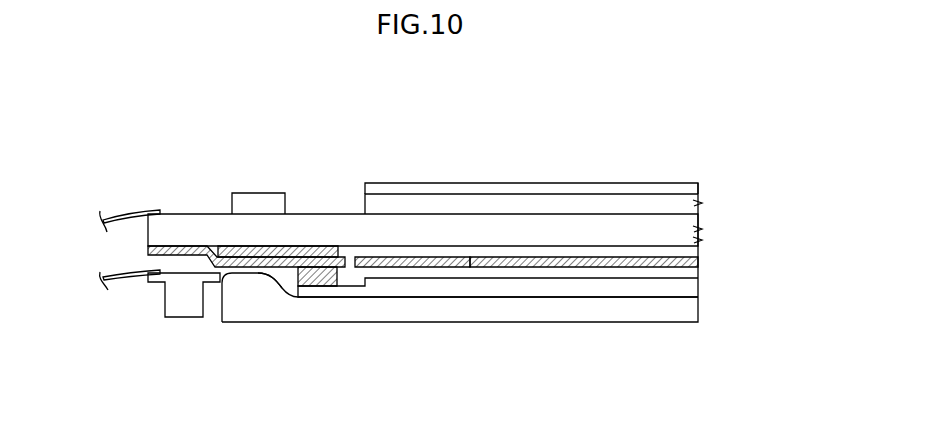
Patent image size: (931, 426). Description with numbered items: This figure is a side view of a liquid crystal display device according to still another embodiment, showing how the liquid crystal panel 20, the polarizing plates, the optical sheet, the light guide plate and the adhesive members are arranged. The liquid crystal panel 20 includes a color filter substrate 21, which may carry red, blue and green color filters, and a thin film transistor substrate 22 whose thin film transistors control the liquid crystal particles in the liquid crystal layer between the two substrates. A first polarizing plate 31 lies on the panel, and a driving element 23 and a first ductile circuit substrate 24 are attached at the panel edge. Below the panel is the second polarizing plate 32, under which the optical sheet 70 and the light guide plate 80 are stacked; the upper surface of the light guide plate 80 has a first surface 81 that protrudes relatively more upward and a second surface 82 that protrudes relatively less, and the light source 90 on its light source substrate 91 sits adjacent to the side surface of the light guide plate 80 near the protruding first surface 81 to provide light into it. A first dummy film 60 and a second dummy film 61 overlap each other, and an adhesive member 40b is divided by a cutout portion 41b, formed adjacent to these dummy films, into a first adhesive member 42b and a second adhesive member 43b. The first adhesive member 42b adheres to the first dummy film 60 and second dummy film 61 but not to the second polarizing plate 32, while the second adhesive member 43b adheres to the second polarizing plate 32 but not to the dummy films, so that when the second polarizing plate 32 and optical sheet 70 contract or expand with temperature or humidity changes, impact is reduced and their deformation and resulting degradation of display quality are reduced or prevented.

The liquid crystal panel 20 is at (758, 211).
The color filter substrate 21 is at (690, 203).
The thin film transistor substrate 22 is at (690, 228).
The driving element 23 is at (257, 198).
The first ductile circuit substrate 24 is at (128, 213).
The first polarizing plate 31 is at (625, 183).
The second polarizing plate 32 is at (692, 253).
The adhesive member 40b is at (400, 145).
The cutout portion 41b is at (350, 262).
The first adhesive member 42b is at (318, 246).
The second adhesive member 43b is at (437, 260).
The first dummy film 60 is at (312, 284).
The second dummy film 61 is at (273, 257).
The optical sheet 70 is at (692, 288).
The light guide plate 80 is at (622, 313).
The first surface 81 is at (253, 275).
The second surface 82 is at (497, 297).
The light source 90 is at (185, 316).
The light source substrate 91 is at (124, 273).